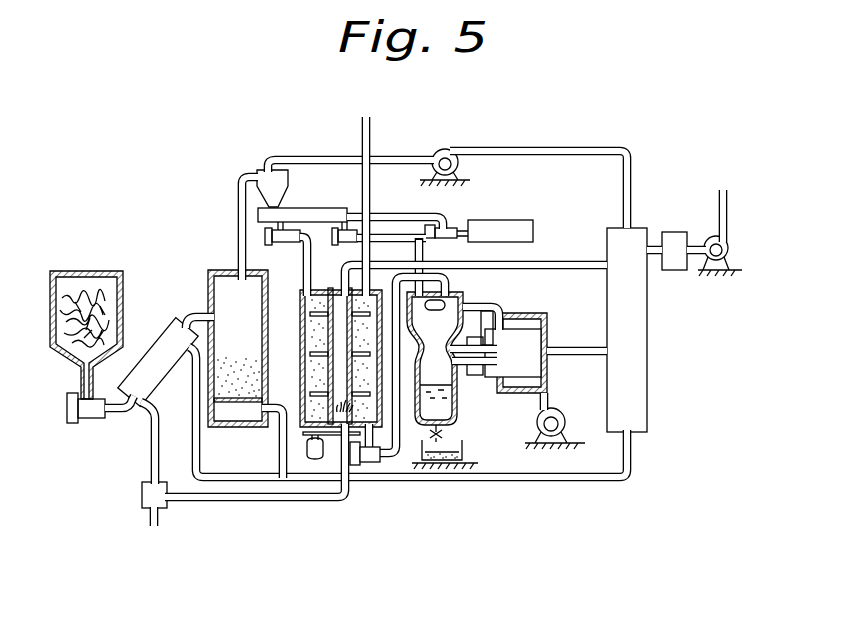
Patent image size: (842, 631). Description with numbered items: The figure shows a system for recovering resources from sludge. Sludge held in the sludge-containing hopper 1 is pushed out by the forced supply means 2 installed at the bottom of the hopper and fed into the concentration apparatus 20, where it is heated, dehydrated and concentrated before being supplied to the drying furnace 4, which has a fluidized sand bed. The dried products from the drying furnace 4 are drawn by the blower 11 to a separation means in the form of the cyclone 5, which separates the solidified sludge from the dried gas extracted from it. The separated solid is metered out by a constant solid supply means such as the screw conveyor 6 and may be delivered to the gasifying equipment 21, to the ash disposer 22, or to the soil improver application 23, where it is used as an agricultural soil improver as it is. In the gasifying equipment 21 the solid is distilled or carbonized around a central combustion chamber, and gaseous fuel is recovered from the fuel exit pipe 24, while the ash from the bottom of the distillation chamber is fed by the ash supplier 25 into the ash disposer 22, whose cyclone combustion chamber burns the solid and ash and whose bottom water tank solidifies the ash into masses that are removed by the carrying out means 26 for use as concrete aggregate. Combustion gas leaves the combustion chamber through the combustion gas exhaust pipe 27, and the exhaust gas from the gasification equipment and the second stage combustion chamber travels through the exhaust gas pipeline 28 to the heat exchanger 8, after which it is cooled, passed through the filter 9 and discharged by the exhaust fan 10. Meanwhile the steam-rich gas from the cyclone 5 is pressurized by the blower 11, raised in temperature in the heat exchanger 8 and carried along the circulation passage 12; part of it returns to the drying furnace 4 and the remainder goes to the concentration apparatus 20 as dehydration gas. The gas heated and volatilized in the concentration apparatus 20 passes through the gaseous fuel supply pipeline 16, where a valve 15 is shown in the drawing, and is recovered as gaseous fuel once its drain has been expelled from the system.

The sludge-containing hopper 1 is at (110, 272).
The forced supply means 2 is at (95, 420).
The drying furnace 4 is at (225, 280).
The cyclone 5 is at (262, 172).
The screw conveyor 6 is at (305, 210).
The heat exchanger 8 is at (612, 230).
The filter 9 is at (672, 232).
The exhaust fan 10 is at (712, 238).
The blower 11 is at (455, 150).
The circulation passage 12 is at (560, 150).
The valve 15 is at (140, 497).
The gaseous fuel supply pipeline 16 is at (285, 505).
The concentration apparatus 20 is at (170, 316).
The gasifying equipment 21 is at (316, 290).
The ash disposer 22 is at (470, 290).
The soil improver application 23 is at (510, 225).
The fuel exit pipe 24 is at (360, 142).
The ash supplier 25 is at (385, 458).
The carrying out means 26 is at (470, 450).
The combustion gas exhaust pipe 27 is at (580, 270).
The exhaust gas pipeline 28 is at (576, 357).